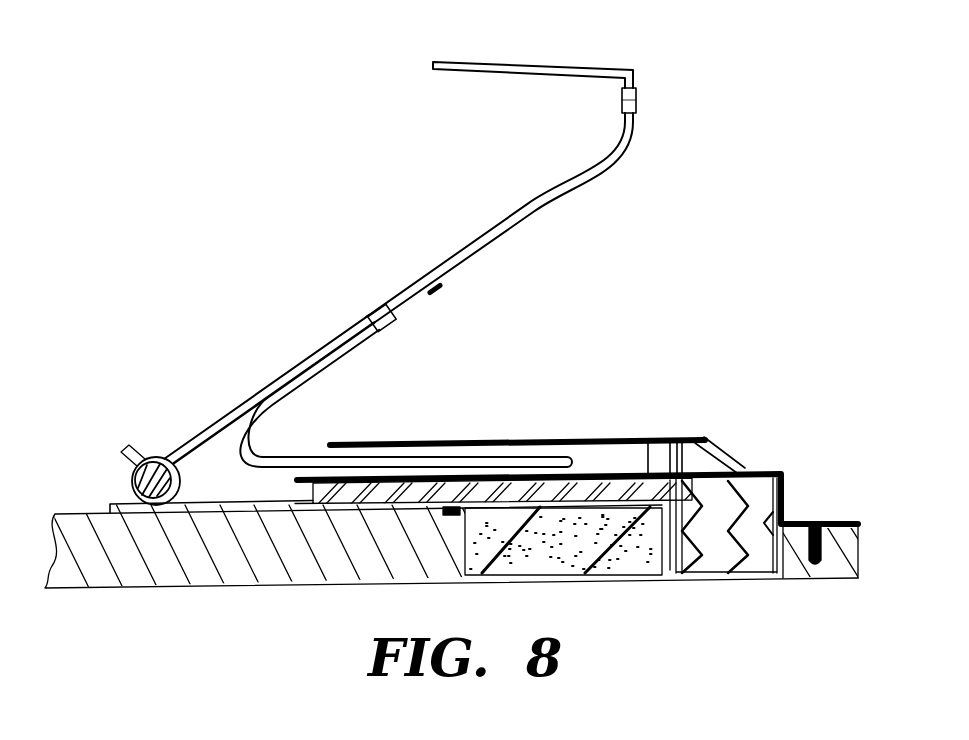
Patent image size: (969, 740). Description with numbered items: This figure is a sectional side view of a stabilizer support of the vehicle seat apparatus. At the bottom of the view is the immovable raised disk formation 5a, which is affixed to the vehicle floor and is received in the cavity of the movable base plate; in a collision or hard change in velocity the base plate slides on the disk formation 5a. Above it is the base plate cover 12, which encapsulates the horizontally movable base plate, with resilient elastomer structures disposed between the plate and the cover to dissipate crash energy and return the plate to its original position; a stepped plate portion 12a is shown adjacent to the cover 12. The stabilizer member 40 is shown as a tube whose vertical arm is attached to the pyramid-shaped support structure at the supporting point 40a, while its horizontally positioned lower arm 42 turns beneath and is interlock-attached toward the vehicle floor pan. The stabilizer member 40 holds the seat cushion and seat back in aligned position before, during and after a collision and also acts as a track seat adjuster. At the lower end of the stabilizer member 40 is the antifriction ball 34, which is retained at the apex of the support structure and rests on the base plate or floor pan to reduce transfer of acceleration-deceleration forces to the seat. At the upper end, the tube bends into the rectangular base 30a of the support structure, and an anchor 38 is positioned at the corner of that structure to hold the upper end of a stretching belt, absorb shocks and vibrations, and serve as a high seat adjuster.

The rectangular base 30a is at (533, 64).
The anchor 38 is at (637, 103).
The supporting point 40a is at (397, 331).
The stabilizer member 40 is at (317, 373).
The lower arm 42 is at (262, 468).
The antifriction ball 34 is at (158, 457).
The upper plate 12a is at (510, 440).
The base plate cover 12 is at (707, 440).
The raised disk formation 5a is at (103, 582).